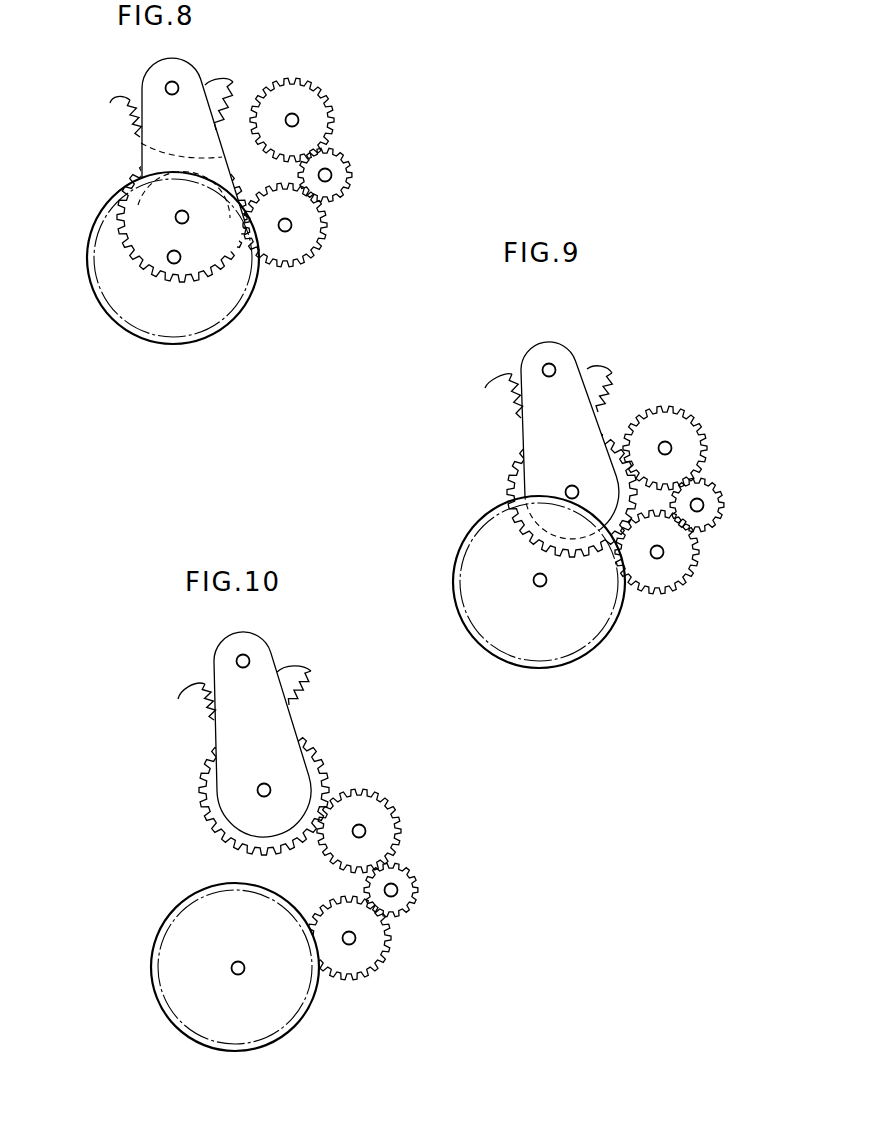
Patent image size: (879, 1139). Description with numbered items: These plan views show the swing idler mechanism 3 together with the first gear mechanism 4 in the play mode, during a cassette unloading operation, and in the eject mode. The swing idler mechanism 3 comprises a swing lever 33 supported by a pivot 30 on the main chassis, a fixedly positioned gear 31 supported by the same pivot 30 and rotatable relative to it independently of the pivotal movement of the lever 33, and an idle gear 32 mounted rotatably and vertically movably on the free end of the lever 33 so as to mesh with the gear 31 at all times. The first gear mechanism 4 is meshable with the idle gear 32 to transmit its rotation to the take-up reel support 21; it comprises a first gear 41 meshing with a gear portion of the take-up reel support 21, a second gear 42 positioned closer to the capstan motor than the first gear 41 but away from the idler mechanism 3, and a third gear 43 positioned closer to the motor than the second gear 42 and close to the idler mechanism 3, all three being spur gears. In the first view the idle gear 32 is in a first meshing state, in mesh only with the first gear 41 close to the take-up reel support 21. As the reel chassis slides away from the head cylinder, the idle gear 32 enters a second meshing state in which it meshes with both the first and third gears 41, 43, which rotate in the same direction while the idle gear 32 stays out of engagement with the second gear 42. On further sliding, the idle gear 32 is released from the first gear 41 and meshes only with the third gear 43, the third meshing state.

In FIG. 8, the swing idler mechanism 3 is at (141, 152).
In FIG. 10, the swing idler mechanism 3 is at (214, 738).
In FIG. 8, the pivot 30 is at (178, 81).
In FIG. 9, the pivot 30 is at (554, 365).
In FIG. 10, the pivot 30 is at (251, 660).
In FIG. 8, the fixedly positioned gear 31 is at (122, 117).
In FIG. 9, the fixedly positioned gear 31 is at (487, 388).
In FIG. 10, the fixedly positioned gear 31 is at (179, 697).
In FIG. 8, the idle gear 32 is at (118, 208).
In FIG. 9, the idle gear 32 is at (507, 477).
In FIG. 10, the idle gear 32 is at (323, 760).
In FIG. 8, the swing lever 33 is at (178, 150).
In FIG. 9, the swing lever 33 is at (542, 448).
In FIG. 10, the swing lever 33 is at (233, 770).
In FIG. 8, the take-up reel support 21 is at (120, 270).
In FIG. 9, the take-up reel support 21 is at (550, 652).
In FIG. 10, the take-up reel support 21 is at (241, 1035).
In FIG. 8, the first gear mechanism 4 is at (316, 212).
In FIG. 9, the first gear mechanism 4 is at (703, 500).
In FIG. 10, the first gear mechanism 4 is at (392, 906).
In FIG. 8, the first gear 41 is at (297, 259).
In FIG. 9, the first gear 41 is at (682, 552).
In FIG. 10, the first gear 41 is at (370, 954).
In FIG. 8, the second gear 42 is at (332, 185).
In FIG. 9, the second gear 42 is at (712, 507).
In FIG. 10, the second gear 42 is at (408, 913).
In FIG. 8, the third gear 43 is at (323, 120).
In FIG. 9, the third gear 43 is at (690, 448).
In FIG. 10, the third gear 43 is at (399, 844).